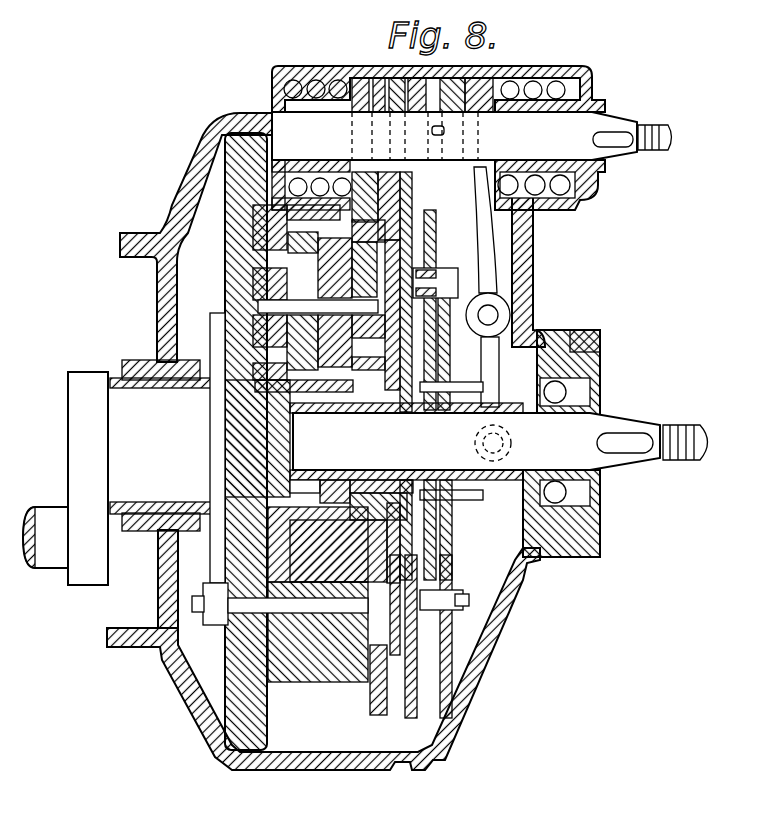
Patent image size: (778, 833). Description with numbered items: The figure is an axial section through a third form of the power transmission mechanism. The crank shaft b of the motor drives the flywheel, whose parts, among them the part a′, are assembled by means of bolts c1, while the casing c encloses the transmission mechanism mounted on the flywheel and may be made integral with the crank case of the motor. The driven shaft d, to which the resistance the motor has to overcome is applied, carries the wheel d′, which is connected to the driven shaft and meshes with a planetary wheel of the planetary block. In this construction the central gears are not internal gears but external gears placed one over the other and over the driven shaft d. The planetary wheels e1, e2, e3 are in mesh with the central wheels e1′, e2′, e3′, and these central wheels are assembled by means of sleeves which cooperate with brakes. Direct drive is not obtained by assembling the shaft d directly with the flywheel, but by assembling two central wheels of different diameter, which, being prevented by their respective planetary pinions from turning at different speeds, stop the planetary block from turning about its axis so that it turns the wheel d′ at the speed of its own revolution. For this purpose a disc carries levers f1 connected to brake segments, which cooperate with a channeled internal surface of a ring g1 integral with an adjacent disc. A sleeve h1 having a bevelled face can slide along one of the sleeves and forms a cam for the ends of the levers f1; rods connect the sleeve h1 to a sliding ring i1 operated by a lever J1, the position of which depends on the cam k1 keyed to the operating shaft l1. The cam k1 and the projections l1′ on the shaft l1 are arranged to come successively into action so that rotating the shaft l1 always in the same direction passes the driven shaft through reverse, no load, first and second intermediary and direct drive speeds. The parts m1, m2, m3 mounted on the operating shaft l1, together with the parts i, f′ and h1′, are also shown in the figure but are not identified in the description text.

The casing c is at (192, 182).
The crank shaft b is at (88, 413).
The flywheel part a′ is at (273, 676).
The wheel d′ is at (262, 360).
The bolts c1 is at (252, 606).
The cam k1 is at (490, 95).
The clutch member m3 is at (353, 77).
The clutch member m2 is at (380, 78).
The clutch member m1 is at (445, 76).
The operating shaft l1 is at (595, 122).
The projections l1′ is at (365, 147).
The ball bearing flange i is at (578, 190).
The planetary wheel e1 is at (297, 222).
The planetary wheel e2 is at (327, 252).
The planetary wheel e3 is at (440, 262).
The shifting lever f′ is at (423, 240).
The levers f1 is at (503, 320).
The lever J1 is at (578, 347).
The sliding ring i1 is at (547, 392).
The bearing housing flange h1′ is at (577, 527).
The driven shaft d is at (623, 462).
The central wheel e1′ is at (320, 412).
The central wheel e2′ is at (353, 412).
The central wheel e3′ is at (366, 412).
The sleeve h1 is at (437, 500).
The ring g1 is at (436, 655).